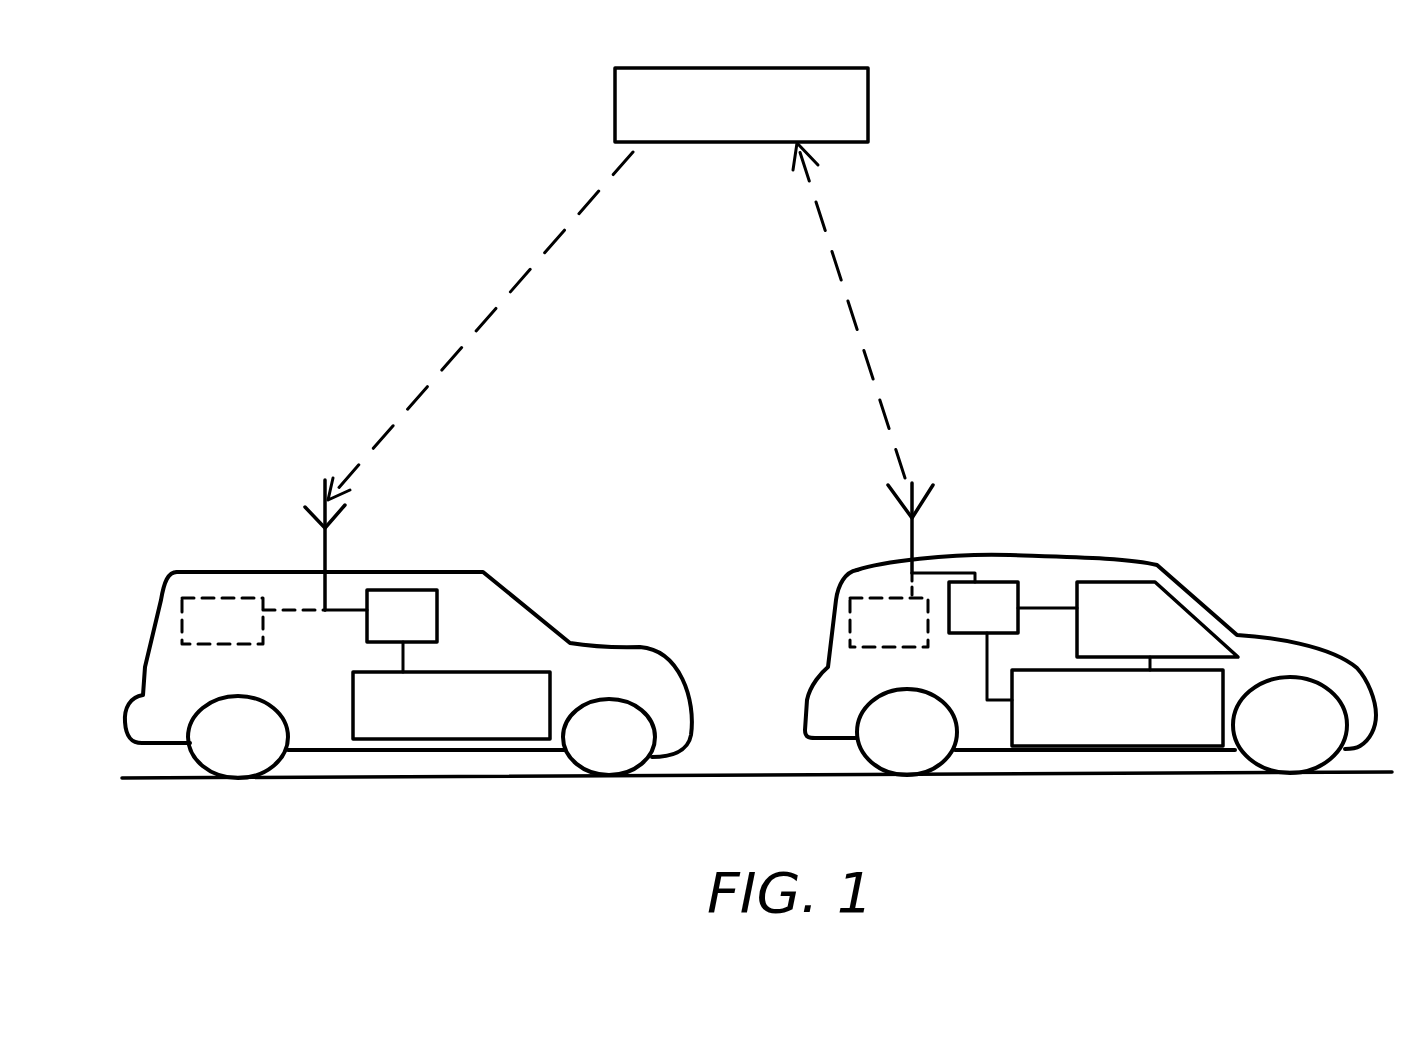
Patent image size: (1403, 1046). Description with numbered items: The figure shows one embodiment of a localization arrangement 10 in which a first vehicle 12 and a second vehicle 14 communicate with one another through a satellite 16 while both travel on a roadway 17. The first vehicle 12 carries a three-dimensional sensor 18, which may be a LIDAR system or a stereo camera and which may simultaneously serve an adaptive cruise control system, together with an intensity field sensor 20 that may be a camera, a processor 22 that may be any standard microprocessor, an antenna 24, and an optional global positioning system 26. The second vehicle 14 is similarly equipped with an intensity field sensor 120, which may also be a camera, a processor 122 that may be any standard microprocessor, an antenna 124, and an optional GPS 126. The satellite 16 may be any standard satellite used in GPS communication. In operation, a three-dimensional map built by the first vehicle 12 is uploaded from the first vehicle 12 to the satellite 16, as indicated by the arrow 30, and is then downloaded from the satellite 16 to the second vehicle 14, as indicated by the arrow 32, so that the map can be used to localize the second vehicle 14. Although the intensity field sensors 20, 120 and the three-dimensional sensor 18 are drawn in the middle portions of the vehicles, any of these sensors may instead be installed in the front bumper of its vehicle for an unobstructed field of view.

The localization arrangement 10 is at (1222, 200).
The first vehicle 12 is at (1273, 633).
The second vehicle 14 is at (633, 647).
The satellite 16 is at (868, 110).
The roadway 17 is at (777, 775).
The three-dimensional sensor 18 is at (1132, 582).
The intensity field sensor 20 is at (1008, 720).
The processor 22 is at (1007, 583).
The antenna 24 is at (913, 528).
The global positioning system 26 is at (855, 627).
The arrow 30 is at (893, 428).
The arrow 32 is at (550, 247).
The intensity field sensor 120 is at (353, 708).
The processor 122 is at (407, 590).
The antenna 124 is at (328, 542).
The GPS 126 is at (210, 597).